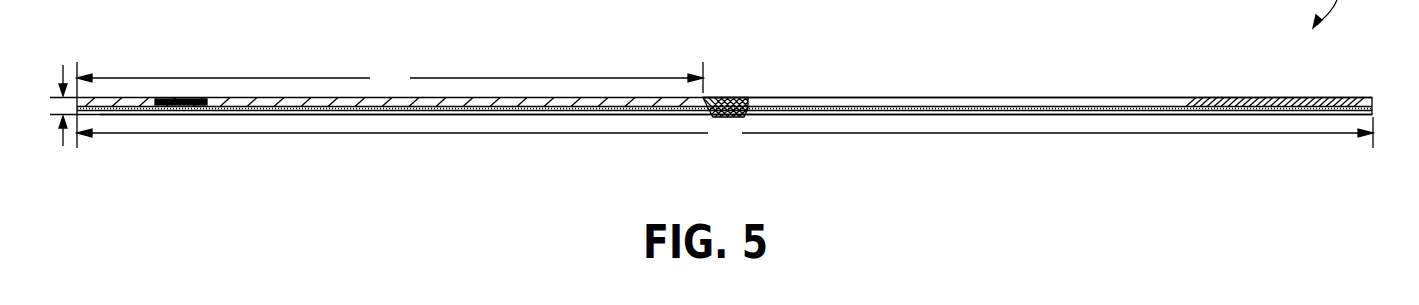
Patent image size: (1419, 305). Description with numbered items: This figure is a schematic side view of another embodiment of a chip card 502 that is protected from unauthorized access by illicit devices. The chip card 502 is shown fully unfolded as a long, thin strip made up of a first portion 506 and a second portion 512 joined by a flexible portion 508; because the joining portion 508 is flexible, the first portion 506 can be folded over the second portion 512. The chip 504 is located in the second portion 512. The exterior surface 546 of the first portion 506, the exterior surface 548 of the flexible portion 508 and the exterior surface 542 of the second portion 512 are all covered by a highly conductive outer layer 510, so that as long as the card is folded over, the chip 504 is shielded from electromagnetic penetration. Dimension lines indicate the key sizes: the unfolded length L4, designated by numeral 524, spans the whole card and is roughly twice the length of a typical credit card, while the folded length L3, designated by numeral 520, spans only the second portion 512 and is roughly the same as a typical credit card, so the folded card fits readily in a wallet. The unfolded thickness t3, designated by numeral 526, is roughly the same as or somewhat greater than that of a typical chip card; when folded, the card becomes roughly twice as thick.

The chip card 502 is at (1351, 76).
The chip 504 is at (183, 97).
The first portion 506 is at (1150, 102).
The flexible portion 508 is at (723, 105).
The highly conductive outer layer 510 is at (1047, 105).
The second portion 512 is at (540, 100).
The length L3 520 is at (392, 60).
The length L4 524 is at (725, 152).
The thickness t3 526 is at (34, 90).
The exterior surface of second portion 542 is at (460, 112).
The exterior surface of first portion 546 is at (1130, 110).
The exterior surface of flexible portion 548 is at (713, 112).